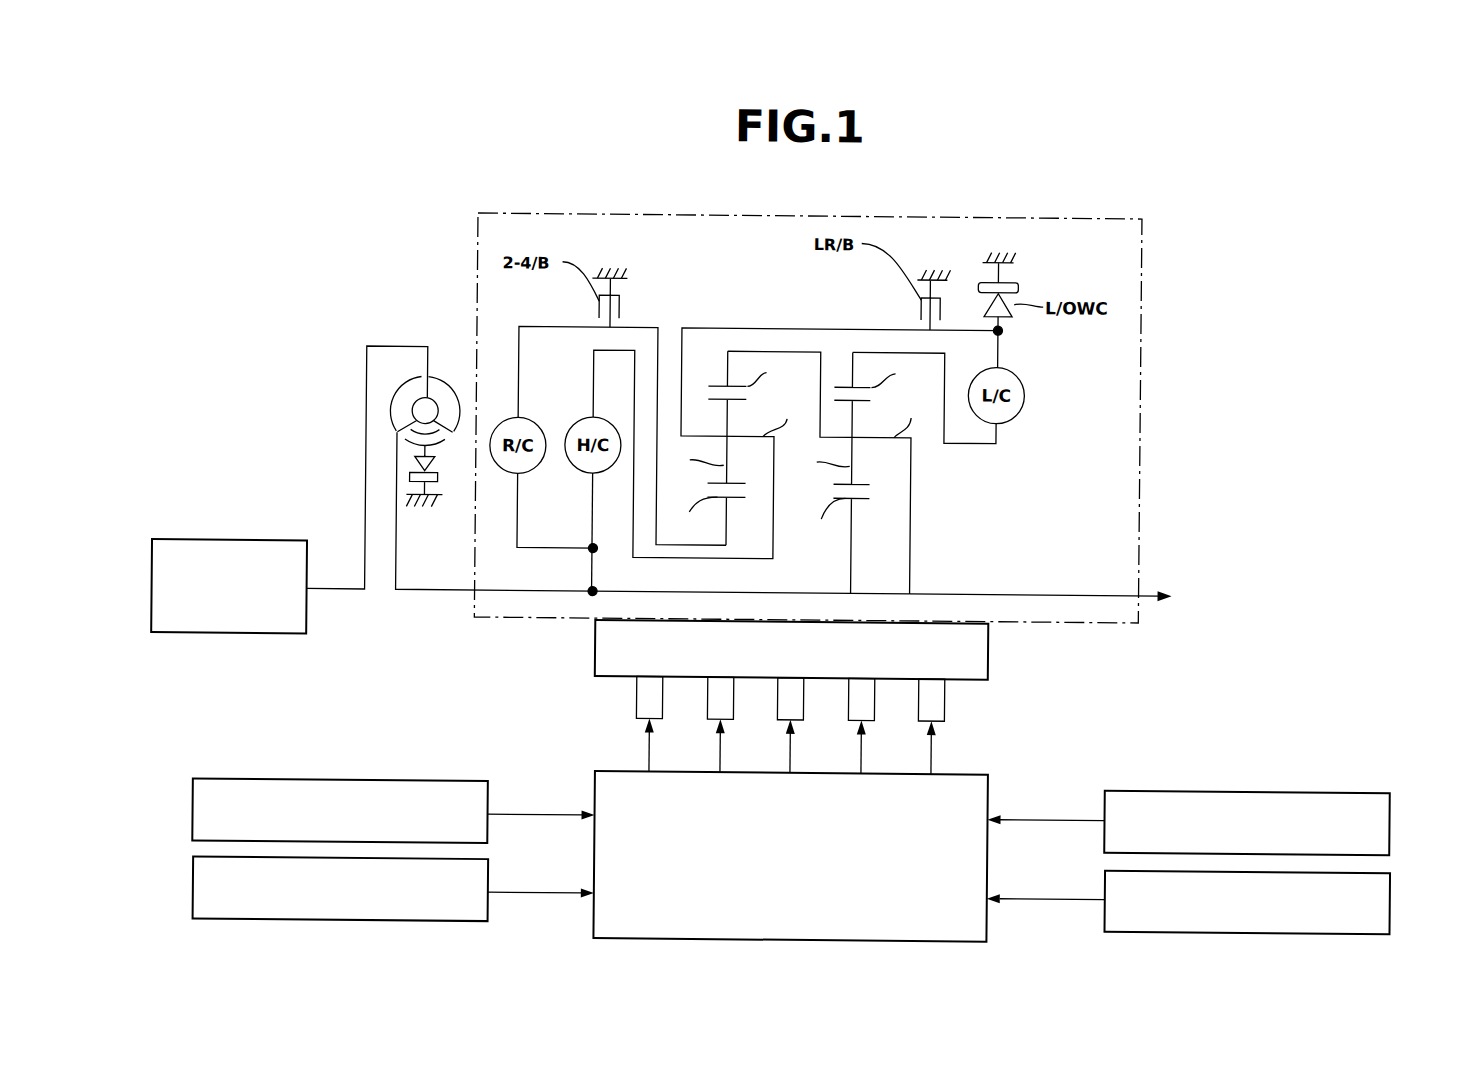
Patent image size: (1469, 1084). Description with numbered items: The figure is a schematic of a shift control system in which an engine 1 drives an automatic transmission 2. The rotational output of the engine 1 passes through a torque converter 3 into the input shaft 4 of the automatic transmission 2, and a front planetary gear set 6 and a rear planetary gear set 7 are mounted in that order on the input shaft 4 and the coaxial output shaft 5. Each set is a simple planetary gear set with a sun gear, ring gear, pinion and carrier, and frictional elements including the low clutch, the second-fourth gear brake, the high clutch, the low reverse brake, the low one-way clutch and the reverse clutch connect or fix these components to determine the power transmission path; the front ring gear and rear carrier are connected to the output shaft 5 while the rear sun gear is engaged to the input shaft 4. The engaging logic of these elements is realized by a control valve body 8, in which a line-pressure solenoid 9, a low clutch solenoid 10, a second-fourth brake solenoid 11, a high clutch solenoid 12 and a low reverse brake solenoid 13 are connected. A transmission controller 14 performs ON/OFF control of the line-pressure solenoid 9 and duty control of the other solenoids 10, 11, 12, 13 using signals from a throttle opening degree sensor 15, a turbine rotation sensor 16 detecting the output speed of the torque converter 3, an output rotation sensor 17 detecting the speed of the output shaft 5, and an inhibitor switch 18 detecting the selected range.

The engine 1 is at (210, 543).
The automatic transmission 2 is at (1157, 262).
The torque converter 3 is at (446, 366).
The input shaft 4 is at (436, 592).
The output shaft 5 is at (1031, 590).
The front planetary gear set 6 is at (710, 343).
The rear planetary gear set 7 is at (831, 342).
The control valve body 8 is at (994, 638).
The line-pressure solenoid 9 is at (639, 699).
The low clutch solenoid 10 is at (710, 698).
The second-fourth brake solenoid 11 is at (780, 697).
The high clutch solenoid 12 is at (852, 697).
The low reverse brake solenoid 13 is at (920, 696).
The transmission controller 14 is at (962, 770).
The throttle opening degree sensor 15 is at (197, 813).
The turbine rotation sensor 16 is at (198, 898).
The output rotation sensor 17 is at (1398, 815).
The inhibitor switch 18 is at (1399, 894).